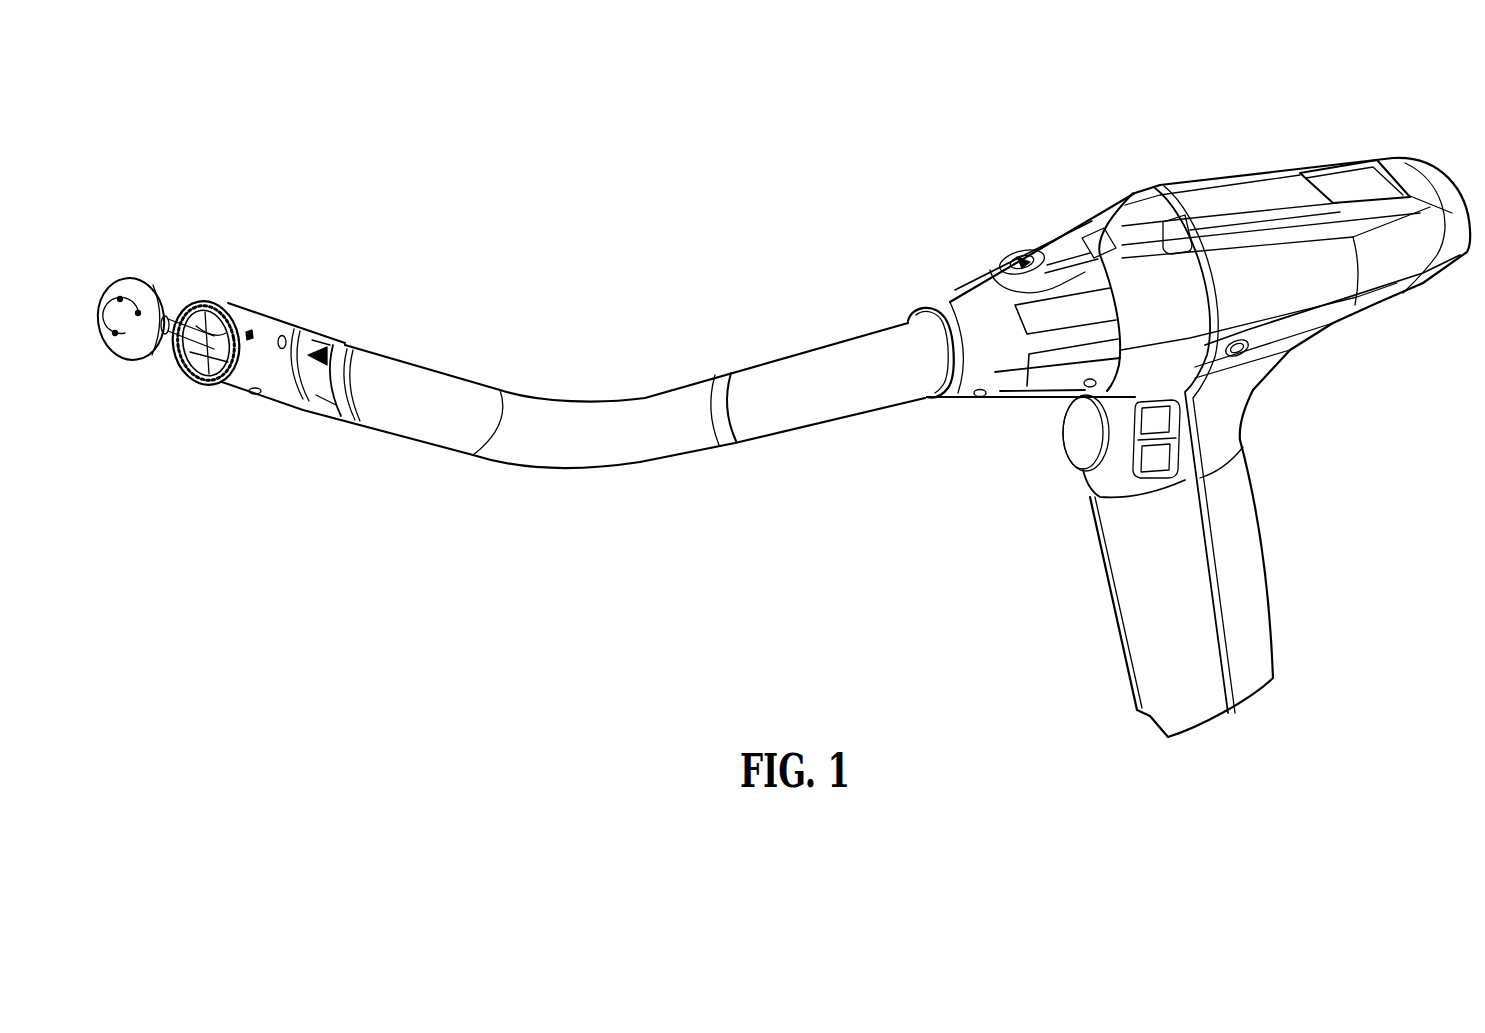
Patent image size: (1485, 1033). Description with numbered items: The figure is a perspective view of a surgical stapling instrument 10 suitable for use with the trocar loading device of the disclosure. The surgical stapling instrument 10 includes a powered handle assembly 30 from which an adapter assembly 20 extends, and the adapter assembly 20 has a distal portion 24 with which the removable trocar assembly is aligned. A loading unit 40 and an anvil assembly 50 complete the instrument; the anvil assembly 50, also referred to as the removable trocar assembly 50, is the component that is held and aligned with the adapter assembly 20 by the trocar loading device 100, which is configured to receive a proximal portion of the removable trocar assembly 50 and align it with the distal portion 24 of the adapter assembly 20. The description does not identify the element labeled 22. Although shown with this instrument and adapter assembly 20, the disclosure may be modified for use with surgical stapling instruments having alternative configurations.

The surgical stapling instrument 10 is at (968, 152).
The powered handle assembly 30 is at (1225, 152).
The adapter assembly 20 is at (625, 312).
The connector 22 is at (904, 308).
The distal portion 24 is at (507, 378).
The loading unit 40 is at (210, 390).
The trocar loading device 100 is at (185, 372).
The anvil assembly 50 is at (123, 367).